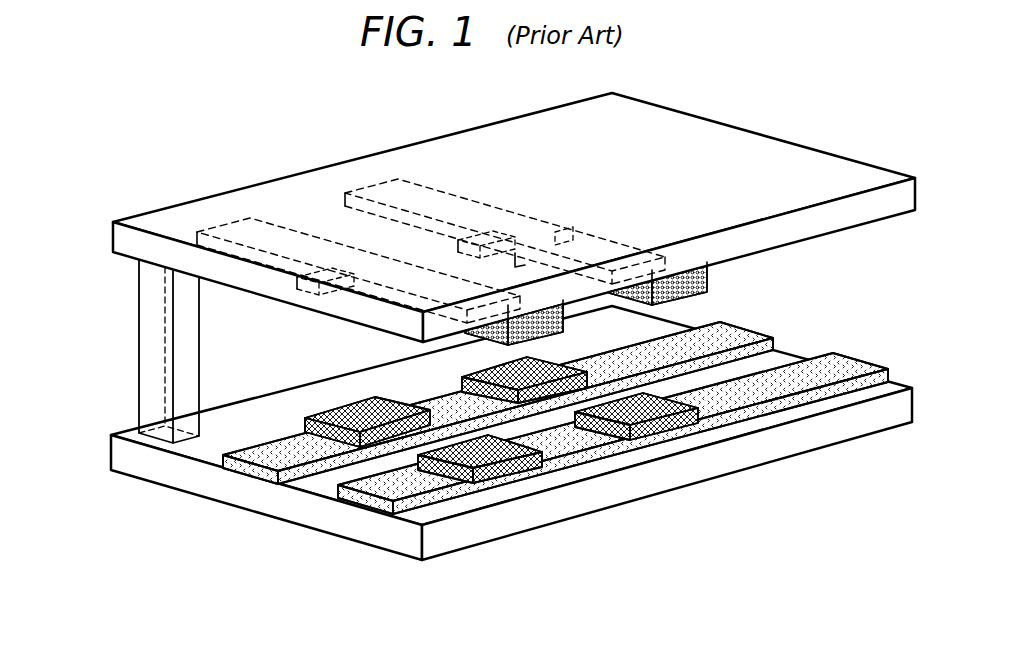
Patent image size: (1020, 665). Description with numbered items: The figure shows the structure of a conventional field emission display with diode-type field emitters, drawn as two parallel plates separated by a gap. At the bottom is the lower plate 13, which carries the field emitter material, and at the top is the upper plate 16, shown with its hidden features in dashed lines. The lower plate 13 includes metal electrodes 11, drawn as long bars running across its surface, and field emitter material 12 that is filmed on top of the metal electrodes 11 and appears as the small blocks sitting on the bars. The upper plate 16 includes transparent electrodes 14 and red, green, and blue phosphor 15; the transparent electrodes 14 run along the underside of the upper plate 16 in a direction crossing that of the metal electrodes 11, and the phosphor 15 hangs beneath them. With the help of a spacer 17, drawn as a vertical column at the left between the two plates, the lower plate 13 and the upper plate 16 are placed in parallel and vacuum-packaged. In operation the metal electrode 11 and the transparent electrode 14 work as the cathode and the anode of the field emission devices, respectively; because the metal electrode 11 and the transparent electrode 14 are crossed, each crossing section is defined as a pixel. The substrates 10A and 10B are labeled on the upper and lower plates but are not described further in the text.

The upper substrate 10A is at (790, 168).
The lower substrate 10B is at (868, 425).
The metal electrode 11 is at (650, 446).
The field emitter material 12 is at (538, 466).
The lower plate 13 is at (808, 455).
The transparent electrode 14 is at (708, 270).
The phosphor 15 is at (712, 283).
The upper plate 16 is at (452, 179).
The spacer 17 is at (147, 320).